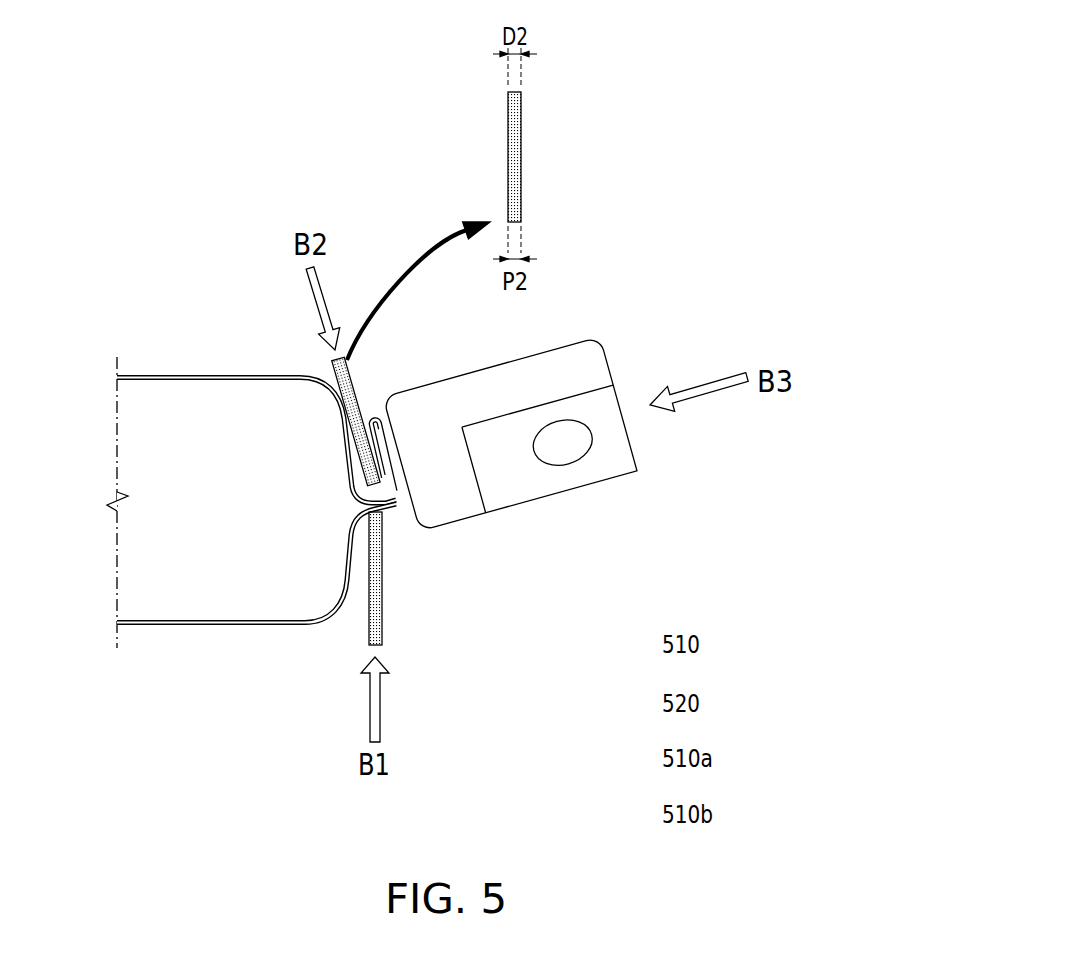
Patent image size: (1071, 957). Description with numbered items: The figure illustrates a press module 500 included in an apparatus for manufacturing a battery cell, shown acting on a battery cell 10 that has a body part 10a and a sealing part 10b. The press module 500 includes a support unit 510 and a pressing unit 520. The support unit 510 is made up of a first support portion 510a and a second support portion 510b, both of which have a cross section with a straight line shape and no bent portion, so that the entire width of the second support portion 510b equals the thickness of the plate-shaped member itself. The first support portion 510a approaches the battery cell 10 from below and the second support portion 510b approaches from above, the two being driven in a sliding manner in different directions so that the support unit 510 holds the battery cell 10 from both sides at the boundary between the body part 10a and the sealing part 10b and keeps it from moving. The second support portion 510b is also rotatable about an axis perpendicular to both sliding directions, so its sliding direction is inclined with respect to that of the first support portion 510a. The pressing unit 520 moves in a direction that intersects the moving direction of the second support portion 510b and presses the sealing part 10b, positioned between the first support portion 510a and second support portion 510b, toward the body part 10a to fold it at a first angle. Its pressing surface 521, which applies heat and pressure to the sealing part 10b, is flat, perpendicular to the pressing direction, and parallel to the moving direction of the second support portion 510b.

The battery cell 10 is at (270, 492).
The body part 10a is at (182, 605).
The sealing part 10b is at (371, 415).
The press module 500 is at (444, 457).
The support unit 510 is at (444, 457).
The first support portion 510a is at (383, 610).
The second support portion 510b is at (332, 360).
The pressing unit 520 is at (475, 383).
The pressing surface 521 is at (400, 512).